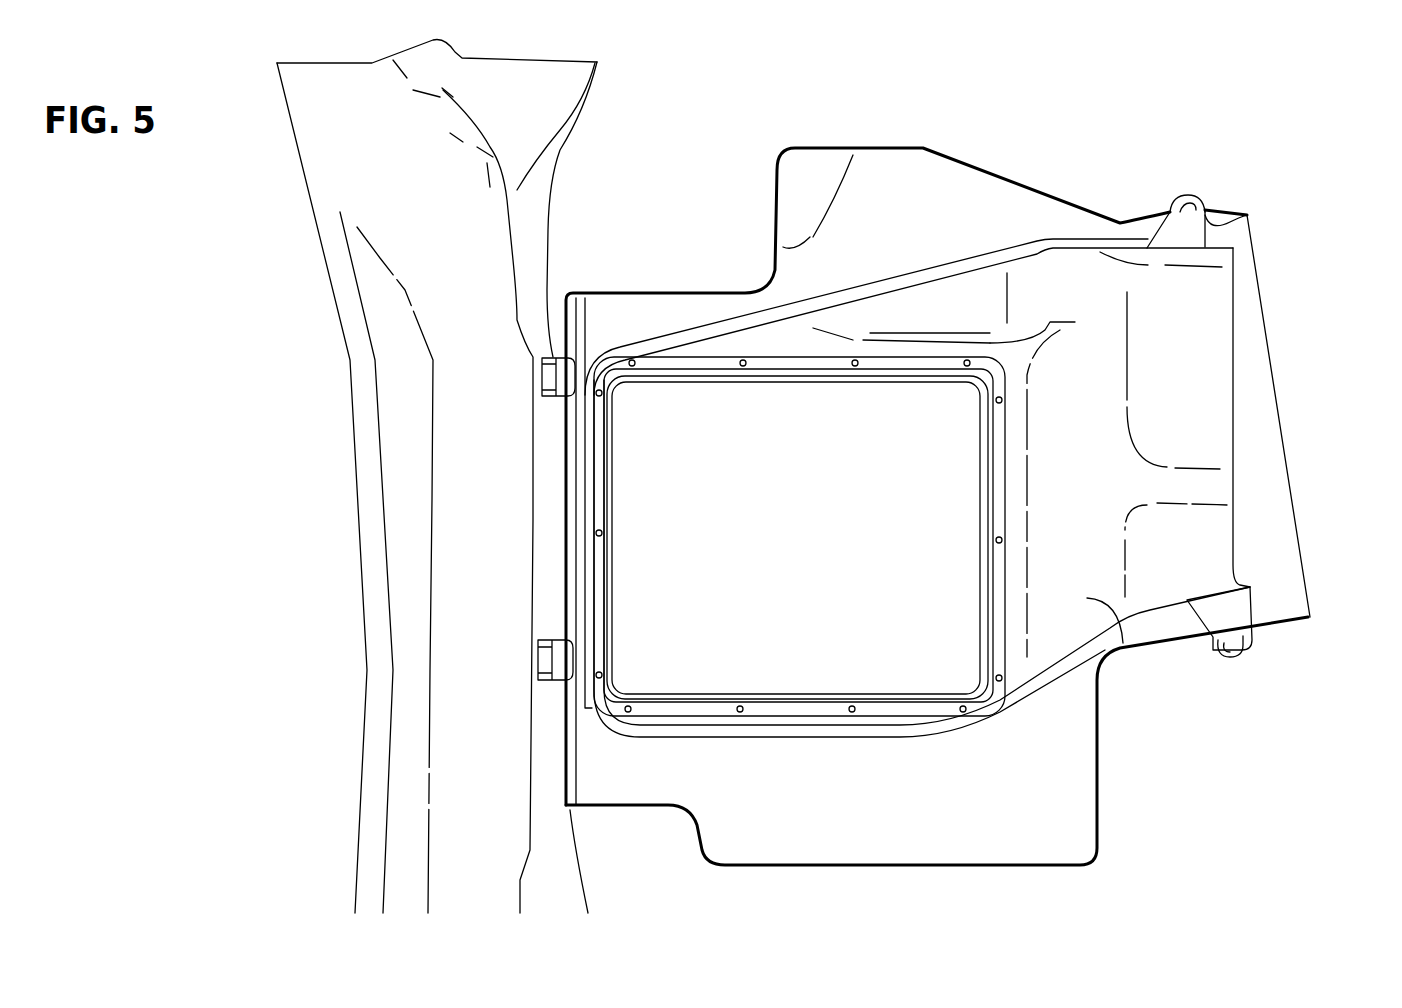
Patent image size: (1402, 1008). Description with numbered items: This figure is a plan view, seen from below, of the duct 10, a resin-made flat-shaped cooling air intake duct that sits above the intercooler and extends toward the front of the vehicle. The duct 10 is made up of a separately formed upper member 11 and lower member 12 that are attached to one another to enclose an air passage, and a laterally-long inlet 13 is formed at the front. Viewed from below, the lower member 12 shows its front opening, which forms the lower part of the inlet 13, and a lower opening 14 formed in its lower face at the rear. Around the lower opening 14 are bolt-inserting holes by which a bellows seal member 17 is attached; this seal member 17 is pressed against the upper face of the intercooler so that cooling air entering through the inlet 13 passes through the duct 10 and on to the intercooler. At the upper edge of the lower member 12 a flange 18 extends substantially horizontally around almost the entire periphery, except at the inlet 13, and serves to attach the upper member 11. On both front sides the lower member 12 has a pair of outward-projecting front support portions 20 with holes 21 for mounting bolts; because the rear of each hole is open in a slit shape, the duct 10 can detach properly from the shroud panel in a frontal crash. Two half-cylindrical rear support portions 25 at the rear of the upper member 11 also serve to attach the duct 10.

The duct 10 is at (873, 142).
The upper member 11 is at (947, 205).
The lower member 12 is at (1123, 646).
The inlet 13 is at (1233, 373).
The lower opening 14 is at (926, 695).
The bellows seal member 17 is at (782, 697).
The flange 18 is at (1053, 243).
The front support portions 20 is at (1230, 213).
The holes 21 is at (1172, 207).
The rear support portions 25 is at (563, 385).